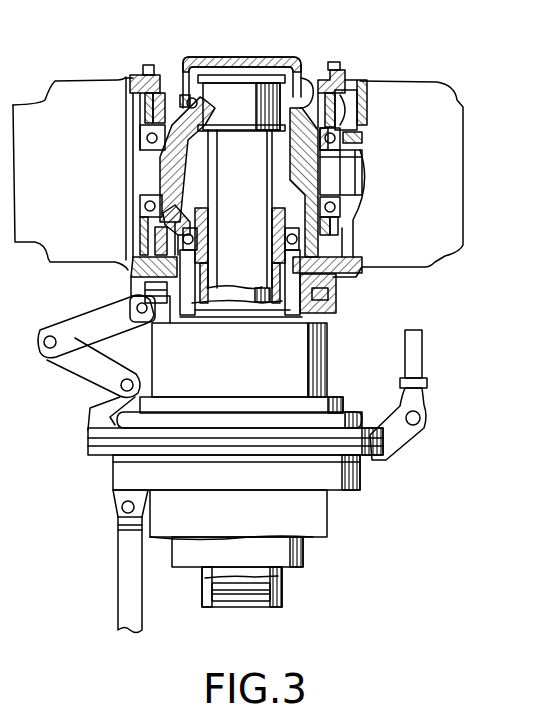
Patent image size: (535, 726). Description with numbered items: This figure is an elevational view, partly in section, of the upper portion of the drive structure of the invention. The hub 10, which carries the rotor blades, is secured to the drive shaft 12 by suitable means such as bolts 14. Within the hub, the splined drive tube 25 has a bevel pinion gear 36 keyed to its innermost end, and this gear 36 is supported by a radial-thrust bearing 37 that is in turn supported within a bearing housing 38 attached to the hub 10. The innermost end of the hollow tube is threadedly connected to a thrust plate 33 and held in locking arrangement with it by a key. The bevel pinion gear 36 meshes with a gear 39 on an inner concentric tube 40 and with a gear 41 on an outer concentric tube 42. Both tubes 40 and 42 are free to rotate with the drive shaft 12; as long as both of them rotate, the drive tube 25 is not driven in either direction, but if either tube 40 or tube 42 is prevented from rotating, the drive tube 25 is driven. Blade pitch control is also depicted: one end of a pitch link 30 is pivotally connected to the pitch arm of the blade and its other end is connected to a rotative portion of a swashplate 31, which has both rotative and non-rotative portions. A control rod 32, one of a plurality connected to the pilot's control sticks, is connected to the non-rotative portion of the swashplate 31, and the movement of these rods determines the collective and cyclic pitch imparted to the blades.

The hub 10 is at (353, 278).
The drive shaft 12 is at (312, 314).
The bolts 14 is at (330, 295).
The splined drive tube 25 is at (372, 168).
The pitch link 30 is at (425, 355).
The swashplate 31 is at (84, 450).
The control rod 32 is at (113, 572).
The thrust plate 33 is at (349, 92).
The bevel pinion gear 36 is at (240, 209).
The radial-thrust bearing 37 is at (340, 206).
The bearing housing 38 is at (312, 80).
The gear 39 is at (293, 70).
The inner concentric tube 40 is at (218, 152).
The gear 41 is at (280, 210).
The outer concentric tube 42 is at (190, 298).